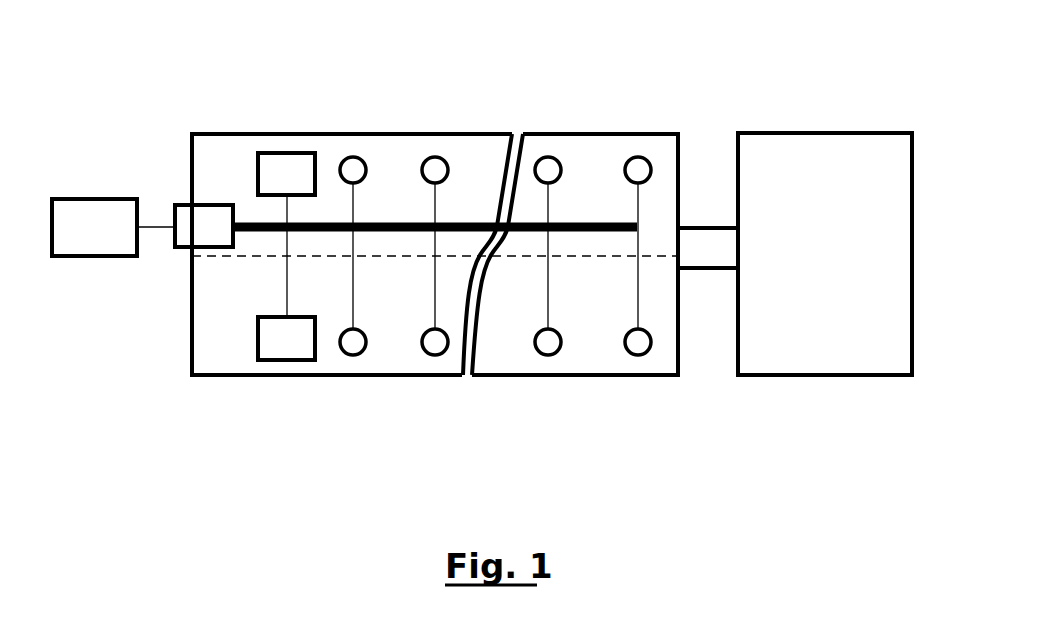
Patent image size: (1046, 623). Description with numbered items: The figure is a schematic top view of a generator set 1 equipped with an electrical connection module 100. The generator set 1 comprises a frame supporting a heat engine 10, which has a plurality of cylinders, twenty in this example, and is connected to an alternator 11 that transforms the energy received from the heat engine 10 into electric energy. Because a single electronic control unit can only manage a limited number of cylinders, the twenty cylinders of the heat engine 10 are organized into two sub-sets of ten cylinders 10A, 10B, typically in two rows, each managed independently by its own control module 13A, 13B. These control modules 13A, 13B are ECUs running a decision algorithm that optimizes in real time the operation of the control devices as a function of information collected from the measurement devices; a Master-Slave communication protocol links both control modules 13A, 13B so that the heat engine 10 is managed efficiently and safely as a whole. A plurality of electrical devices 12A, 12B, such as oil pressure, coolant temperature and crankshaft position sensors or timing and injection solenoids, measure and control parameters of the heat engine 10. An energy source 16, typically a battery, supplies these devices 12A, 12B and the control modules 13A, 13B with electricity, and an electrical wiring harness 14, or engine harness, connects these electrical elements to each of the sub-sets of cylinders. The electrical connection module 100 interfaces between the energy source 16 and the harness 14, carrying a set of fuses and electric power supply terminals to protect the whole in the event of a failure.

The generator set 1 is at (718, 427).
The heat engine 10 is at (646, 124).
The sub-set of cylinders 10A is at (205, 163).
The sub-set of cylinders 10B is at (213, 354).
The alternator 11 is at (832, 115).
The electrical devices 12A is at (638, 157).
The electrical devices 12B is at (638, 355).
The control module 13A is at (287, 173).
The control module 13B is at (285, 342).
The electrical wiring harness 14 is at (250, 222).
The energy source 16 is at (94, 227).
The electrical connection module 100 is at (186, 246).